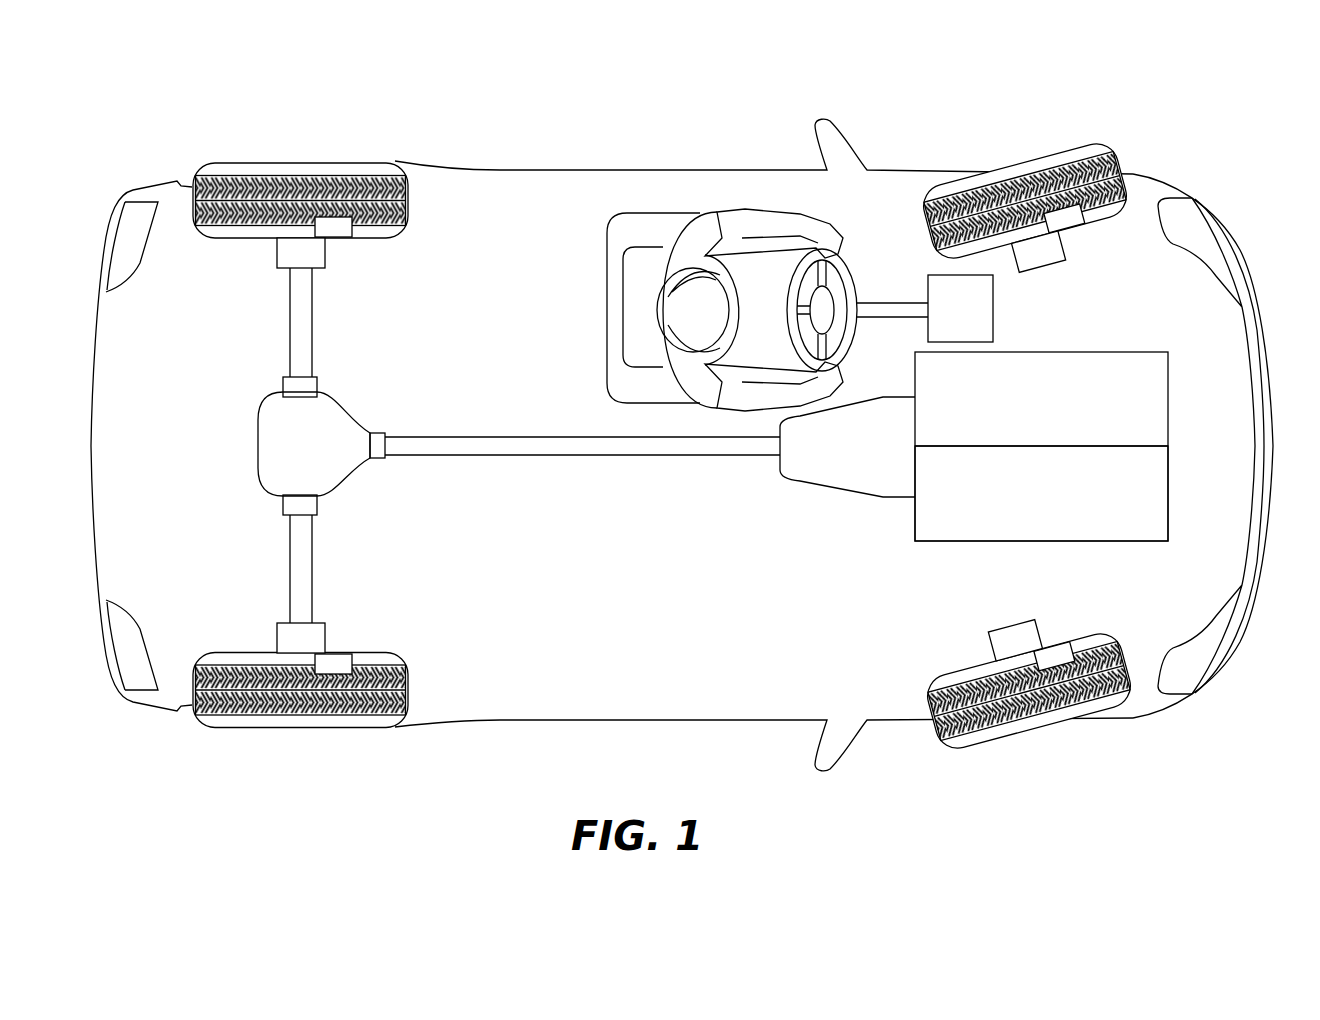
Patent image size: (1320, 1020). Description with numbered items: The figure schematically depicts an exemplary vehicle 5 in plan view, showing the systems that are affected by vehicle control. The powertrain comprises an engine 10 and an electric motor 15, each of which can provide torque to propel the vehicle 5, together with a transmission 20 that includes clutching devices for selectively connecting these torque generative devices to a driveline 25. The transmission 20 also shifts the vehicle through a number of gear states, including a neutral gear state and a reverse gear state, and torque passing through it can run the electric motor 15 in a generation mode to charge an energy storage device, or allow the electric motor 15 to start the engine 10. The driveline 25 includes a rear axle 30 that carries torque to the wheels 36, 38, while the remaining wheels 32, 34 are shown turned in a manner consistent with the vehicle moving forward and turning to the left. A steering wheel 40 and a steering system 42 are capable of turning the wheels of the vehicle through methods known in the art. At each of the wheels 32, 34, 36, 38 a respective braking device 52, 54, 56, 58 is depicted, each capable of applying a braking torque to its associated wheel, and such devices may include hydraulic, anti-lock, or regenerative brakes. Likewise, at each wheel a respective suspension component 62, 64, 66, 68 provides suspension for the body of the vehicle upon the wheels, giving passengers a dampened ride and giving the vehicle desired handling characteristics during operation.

The vehicle 5 is at (511, 170).
The engine 10 is at (1170, 393).
The electric motor 15 is at (1158, 502).
The transmission 20 is at (863, 492).
The driveline 25 is at (487, 456).
The rear axle 30 is at (290, 570).
The wheel 32 is at (1019, 165).
The wheel 34 is at (1016, 740).
The wheel 36 is at (243, 165).
The wheel 38 is at (242, 728).
The steering wheel 40 is at (833, 227).
The steering system 42 is at (944, 298).
The braking device 52 is at (1075, 163).
The braking device 54 is at (1056, 650).
The braking device 56 is at (348, 177).
The braking device 58 is at (340, 654).
The suspension component 62 is at (1070, 236).
The suspension component 64 is at (988, 658).
The suspension component 66 is at (275, 252).
The suspension component 68 is at (318, 620).